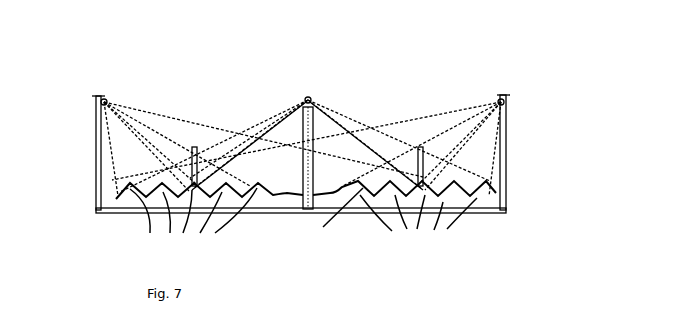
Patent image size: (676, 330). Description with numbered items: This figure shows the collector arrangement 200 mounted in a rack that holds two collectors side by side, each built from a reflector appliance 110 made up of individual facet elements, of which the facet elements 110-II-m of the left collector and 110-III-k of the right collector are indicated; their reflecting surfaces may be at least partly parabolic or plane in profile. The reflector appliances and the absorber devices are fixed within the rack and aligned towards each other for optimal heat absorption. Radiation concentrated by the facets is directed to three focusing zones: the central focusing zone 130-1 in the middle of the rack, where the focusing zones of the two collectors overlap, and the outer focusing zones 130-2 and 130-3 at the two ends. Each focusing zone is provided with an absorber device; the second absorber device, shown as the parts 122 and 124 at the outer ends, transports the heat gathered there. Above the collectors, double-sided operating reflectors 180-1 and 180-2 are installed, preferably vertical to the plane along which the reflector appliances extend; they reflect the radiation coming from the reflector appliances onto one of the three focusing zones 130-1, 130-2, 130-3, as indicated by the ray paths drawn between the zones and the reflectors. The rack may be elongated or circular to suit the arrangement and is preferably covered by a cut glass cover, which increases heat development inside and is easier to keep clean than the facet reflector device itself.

The collector arrangement 200 is at (290, 41).
The reflector appliance 110 is at (102, 182).
The second absorber device 122 is at (77, 153).
The second absorber device 124 is at (524, 152).
The central focusing zone 130-1 is at (311, 98).
The focusing zone 130-2 is at (101, 101).
The focusing zone 130-3 is at (504, 101).
The double-sided operating reflector 180-1 is at (194, 146).
The double-sided operating reflector 180-2 is at (419, 146).
The facet element 110-II-m is at (209, 218).
The facet element 110-III-k is at (446, 255).